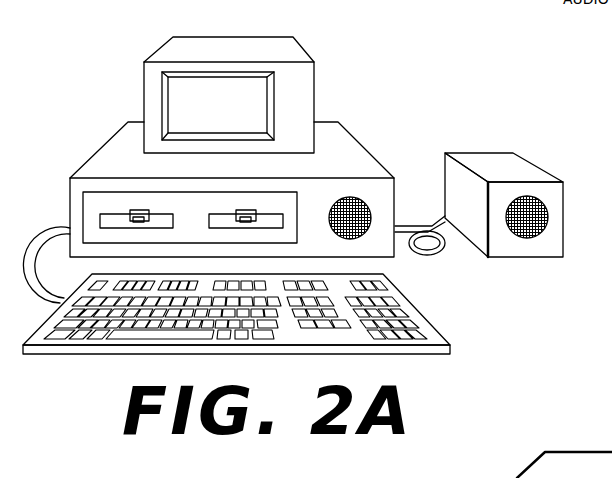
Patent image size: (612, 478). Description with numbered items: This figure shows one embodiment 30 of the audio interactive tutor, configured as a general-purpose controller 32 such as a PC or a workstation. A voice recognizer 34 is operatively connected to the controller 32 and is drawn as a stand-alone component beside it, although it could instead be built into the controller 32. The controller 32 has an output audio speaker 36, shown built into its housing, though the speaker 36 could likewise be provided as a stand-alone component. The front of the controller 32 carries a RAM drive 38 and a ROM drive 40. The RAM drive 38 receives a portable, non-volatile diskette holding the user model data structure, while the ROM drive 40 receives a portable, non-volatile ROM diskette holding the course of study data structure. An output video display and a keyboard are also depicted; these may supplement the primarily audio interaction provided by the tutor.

The audio interactive tutor embodiment 30 is at (464, 298).
The general-purpose controller 32 is at (371, 98).
The voice recognizer 34 is at (523, 170).
The output audio speaker 36 is at (352, 198).
The RAM drive 38 is at (143, 212).
The ROM drive 40 is at (239, 212).